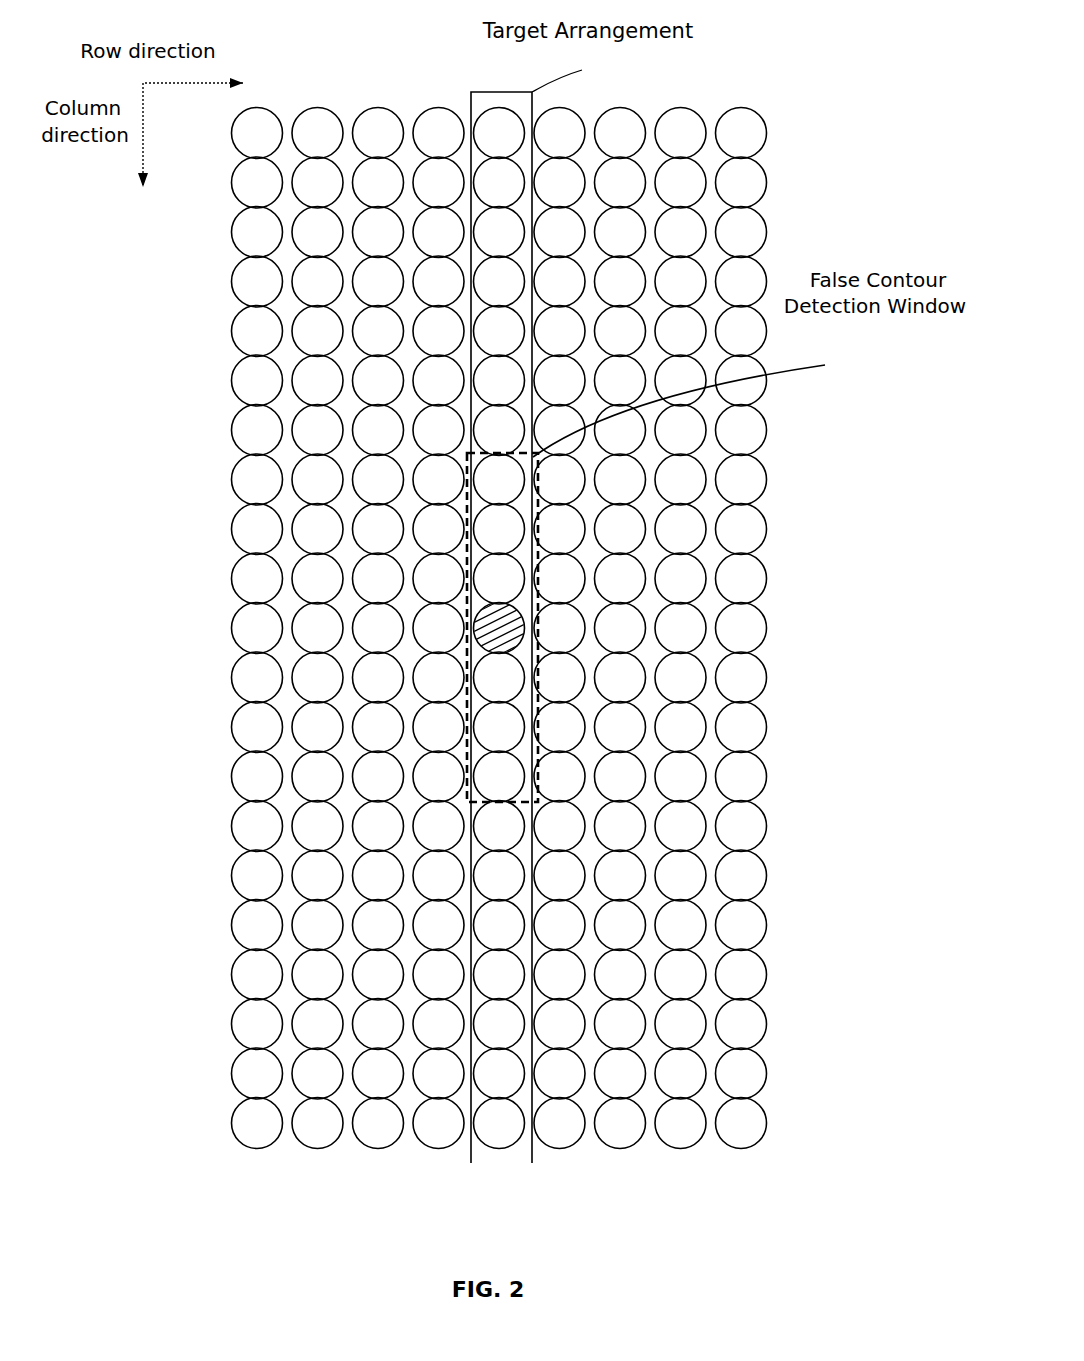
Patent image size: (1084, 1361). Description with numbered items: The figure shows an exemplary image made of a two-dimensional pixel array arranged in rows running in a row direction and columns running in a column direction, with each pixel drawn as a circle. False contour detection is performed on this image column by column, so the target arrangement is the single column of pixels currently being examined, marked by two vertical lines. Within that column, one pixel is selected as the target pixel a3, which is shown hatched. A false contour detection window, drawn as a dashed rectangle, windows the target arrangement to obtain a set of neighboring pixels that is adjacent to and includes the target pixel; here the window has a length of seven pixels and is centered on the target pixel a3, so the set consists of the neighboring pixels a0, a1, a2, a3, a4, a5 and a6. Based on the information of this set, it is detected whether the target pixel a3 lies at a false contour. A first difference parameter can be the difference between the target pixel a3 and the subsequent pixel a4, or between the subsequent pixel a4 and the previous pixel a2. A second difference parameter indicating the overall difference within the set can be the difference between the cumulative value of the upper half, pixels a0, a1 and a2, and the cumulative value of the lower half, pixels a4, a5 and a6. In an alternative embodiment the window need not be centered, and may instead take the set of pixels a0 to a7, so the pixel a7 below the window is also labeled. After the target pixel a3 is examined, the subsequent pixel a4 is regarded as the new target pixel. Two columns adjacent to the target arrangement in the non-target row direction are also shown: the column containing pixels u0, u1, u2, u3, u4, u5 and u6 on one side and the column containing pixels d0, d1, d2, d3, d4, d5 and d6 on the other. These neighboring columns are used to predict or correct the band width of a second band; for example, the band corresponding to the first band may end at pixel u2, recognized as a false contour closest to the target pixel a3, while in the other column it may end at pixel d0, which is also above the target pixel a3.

The pixel u0 is at (438, 479).
The pixel u1 is at (438, 529).
The pixel u2 is at (438, 578).
The pixel u3 is at (438, 628).
The pixel u4 is at (438, 677).
The pixel u5 is at (438, 727).
The pixel u6 is at (438, 776).
The neighboring pixel a0 is at (499, 479).
The neighboring pixel a1 is at (499, 529).
The previous pixel a2 is at (499, 578).
The target pixel a3 is at (499, 628).
The subsequent pixel a4 is at (499, 677).
The neighboring pixel a5 is at (499, 727).
The neighboring pixel a6 is at (499, 776).
The pixel a7 is at (499, 826).
The pixel d0 is at (559, 479).
The pixel d1 is at (559, 529).
The pixel d2 is at (559, 578).
The pixel d3 is at (559, 628).
The pixel d4 is at (559, 677).
The pixel d5 is at (559, 727).
The pixel d6 is at (559, 776).